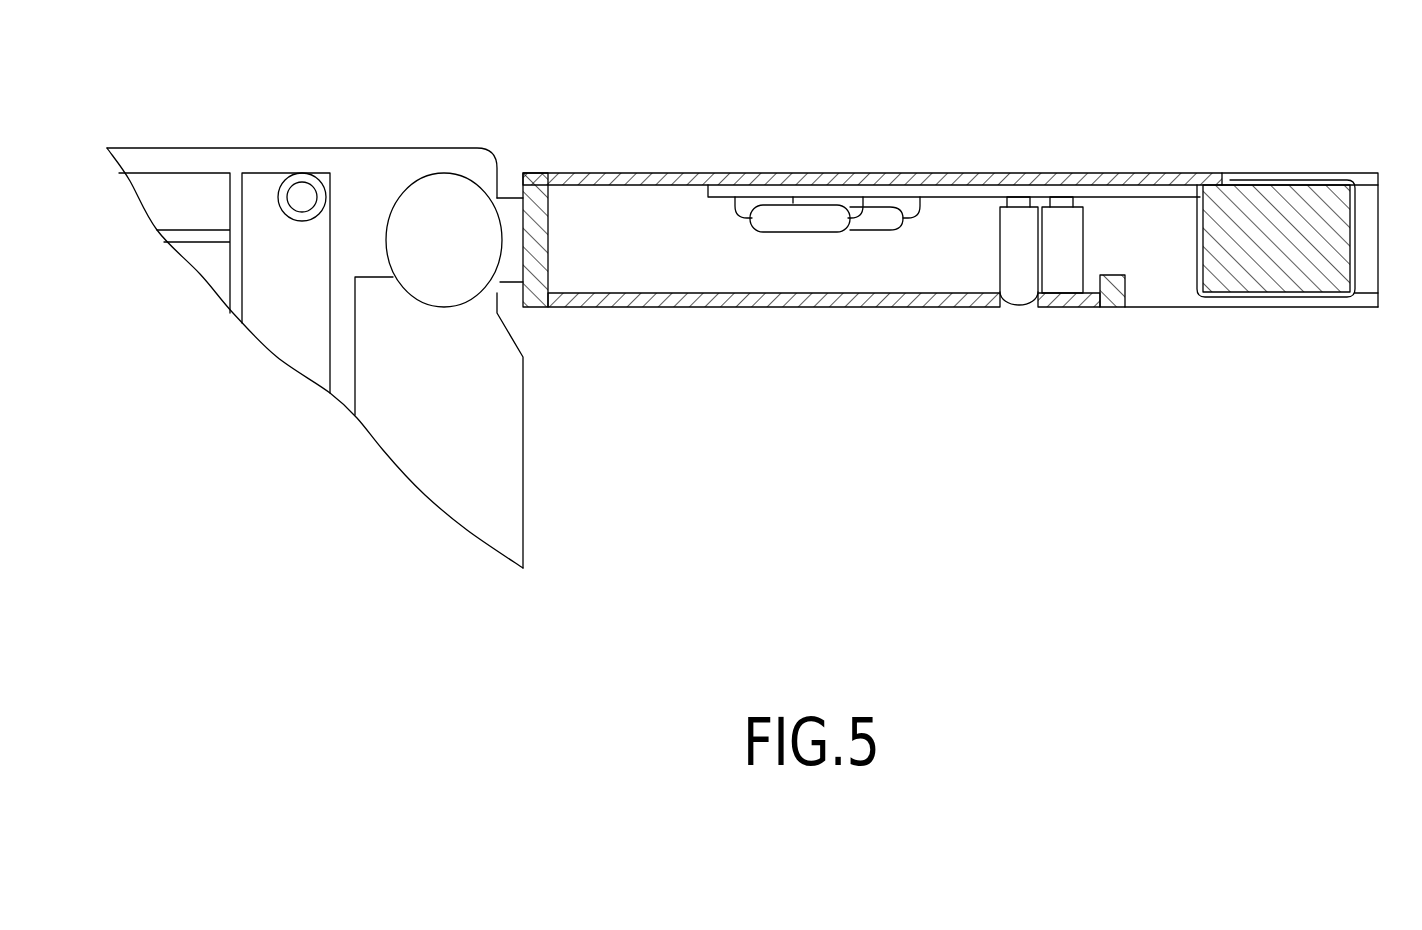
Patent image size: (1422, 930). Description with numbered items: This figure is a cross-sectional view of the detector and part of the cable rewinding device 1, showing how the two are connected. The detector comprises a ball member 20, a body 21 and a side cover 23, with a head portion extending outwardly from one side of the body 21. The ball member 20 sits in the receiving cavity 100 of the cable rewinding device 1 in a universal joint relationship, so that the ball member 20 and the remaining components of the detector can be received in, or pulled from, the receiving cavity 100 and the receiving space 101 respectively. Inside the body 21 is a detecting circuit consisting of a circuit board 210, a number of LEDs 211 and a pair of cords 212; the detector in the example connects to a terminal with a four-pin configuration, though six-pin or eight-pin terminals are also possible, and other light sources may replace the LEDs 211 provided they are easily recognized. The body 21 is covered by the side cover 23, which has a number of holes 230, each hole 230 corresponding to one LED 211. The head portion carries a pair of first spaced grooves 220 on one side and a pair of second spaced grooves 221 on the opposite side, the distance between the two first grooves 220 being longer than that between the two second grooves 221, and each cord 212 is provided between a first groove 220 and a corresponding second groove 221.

The main body 1 is at (248, 160).
The receiving space 101 is at (412, 432).
The receiving cavity 100 is at (400, 190).
The ball member 20 is at (448, 205).
The body 21 is at (660, 173).
The side cover 23 is at (680, 307).
The circuit board 210 is at (822, 193).
The LEDs 211 is at (1025, 305).
The holes 230 is at (1003, 303).
The first spaced grooves 220 is at (1365, 178).
The second spaced grooves 221 is at (1332, 300).
The cords 212 is at (1293, 177).